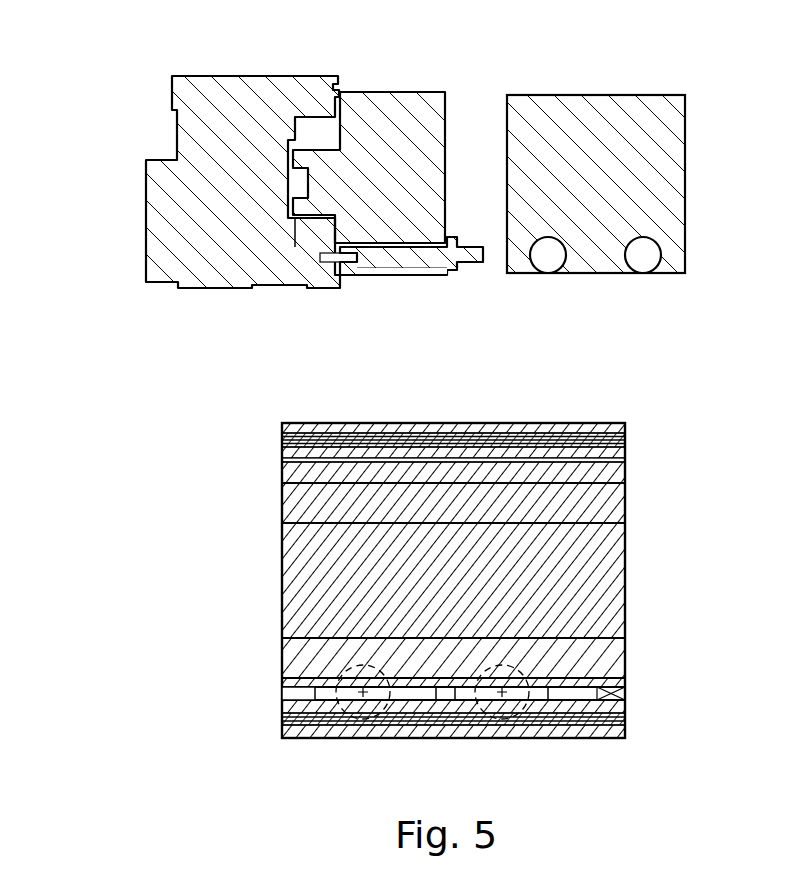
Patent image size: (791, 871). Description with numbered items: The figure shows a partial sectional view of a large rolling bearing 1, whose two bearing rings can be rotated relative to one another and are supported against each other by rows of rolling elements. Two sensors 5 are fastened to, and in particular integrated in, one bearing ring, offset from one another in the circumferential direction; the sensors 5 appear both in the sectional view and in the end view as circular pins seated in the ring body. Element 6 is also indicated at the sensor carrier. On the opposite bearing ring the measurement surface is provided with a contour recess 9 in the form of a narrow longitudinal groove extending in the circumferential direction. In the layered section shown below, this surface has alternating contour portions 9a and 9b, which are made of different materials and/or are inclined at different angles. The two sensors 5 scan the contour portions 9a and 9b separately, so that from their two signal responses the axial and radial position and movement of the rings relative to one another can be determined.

The rolling bearing 1 is at (148, 77).
The sensor 5 is at (400, 262).
The contact carrier 6 is at (450, 234).
The contour recess 9 is at (340, 253).
The contour portion 9a is at (418, 693).
The contour portion 9b is at (555, 694).